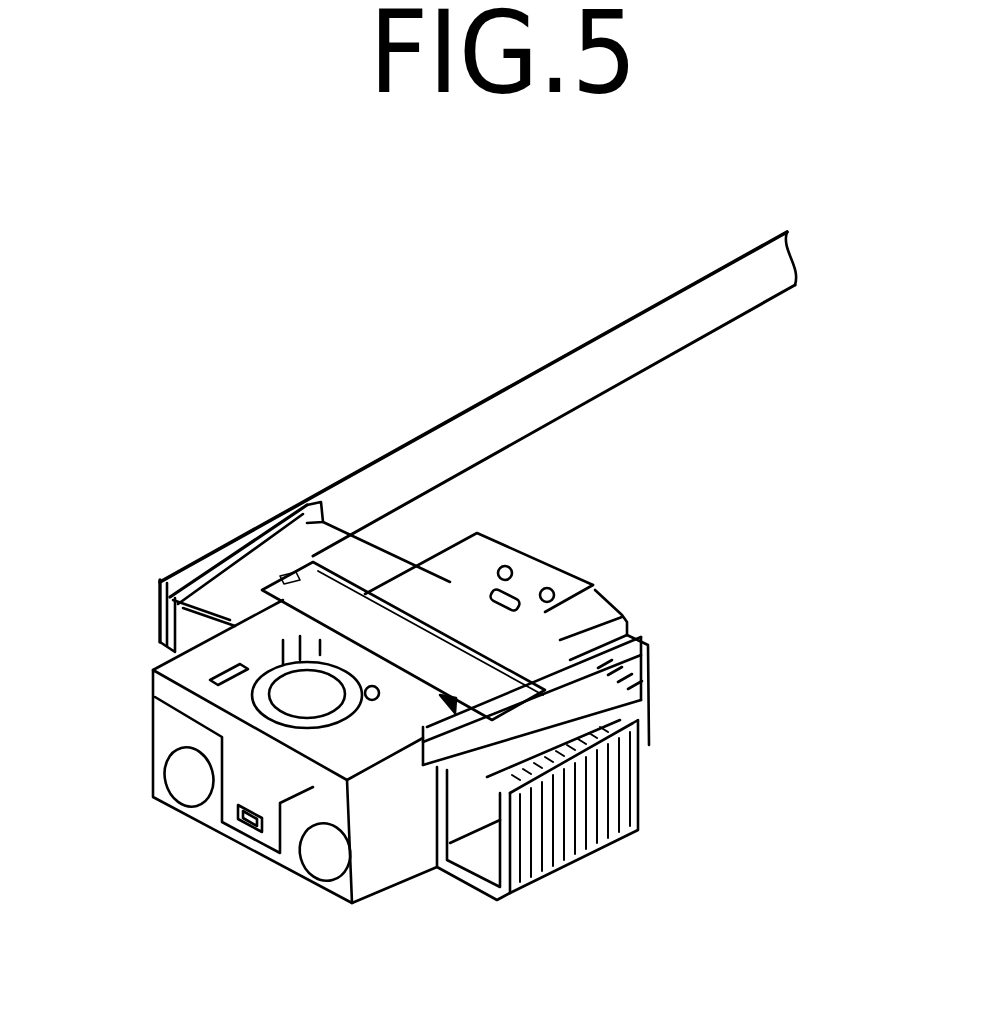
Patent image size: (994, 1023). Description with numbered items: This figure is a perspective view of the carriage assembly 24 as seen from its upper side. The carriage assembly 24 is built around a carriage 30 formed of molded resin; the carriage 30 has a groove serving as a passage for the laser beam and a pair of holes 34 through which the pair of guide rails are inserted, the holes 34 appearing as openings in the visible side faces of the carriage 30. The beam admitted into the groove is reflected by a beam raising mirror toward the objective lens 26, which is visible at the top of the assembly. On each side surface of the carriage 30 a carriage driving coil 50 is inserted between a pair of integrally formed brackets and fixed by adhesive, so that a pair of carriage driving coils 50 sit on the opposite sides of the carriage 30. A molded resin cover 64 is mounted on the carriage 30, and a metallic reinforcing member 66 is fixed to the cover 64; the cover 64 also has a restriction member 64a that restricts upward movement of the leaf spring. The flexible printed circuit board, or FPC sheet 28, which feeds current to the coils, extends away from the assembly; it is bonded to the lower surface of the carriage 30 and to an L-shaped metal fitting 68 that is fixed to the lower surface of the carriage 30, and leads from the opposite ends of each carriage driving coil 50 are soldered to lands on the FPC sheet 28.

The carriage assembly 24 is at (560, 557).
The objective lens 26 is at (297, 700).
The flexible printed circuit board (FPC sheet) 28 is at (513, 385).
The carriage 30 is at (385, 863).
The holes 34 is at (190, 790).
The carriage driving coil 50 is at (573, 858).
The cover 64 is at (203, 733).
The restriction member 64a is at (481, 636).
The reinforcing member 66 is at (385, 625).
The L-shaped metal fitting 68 is at (218, 557).